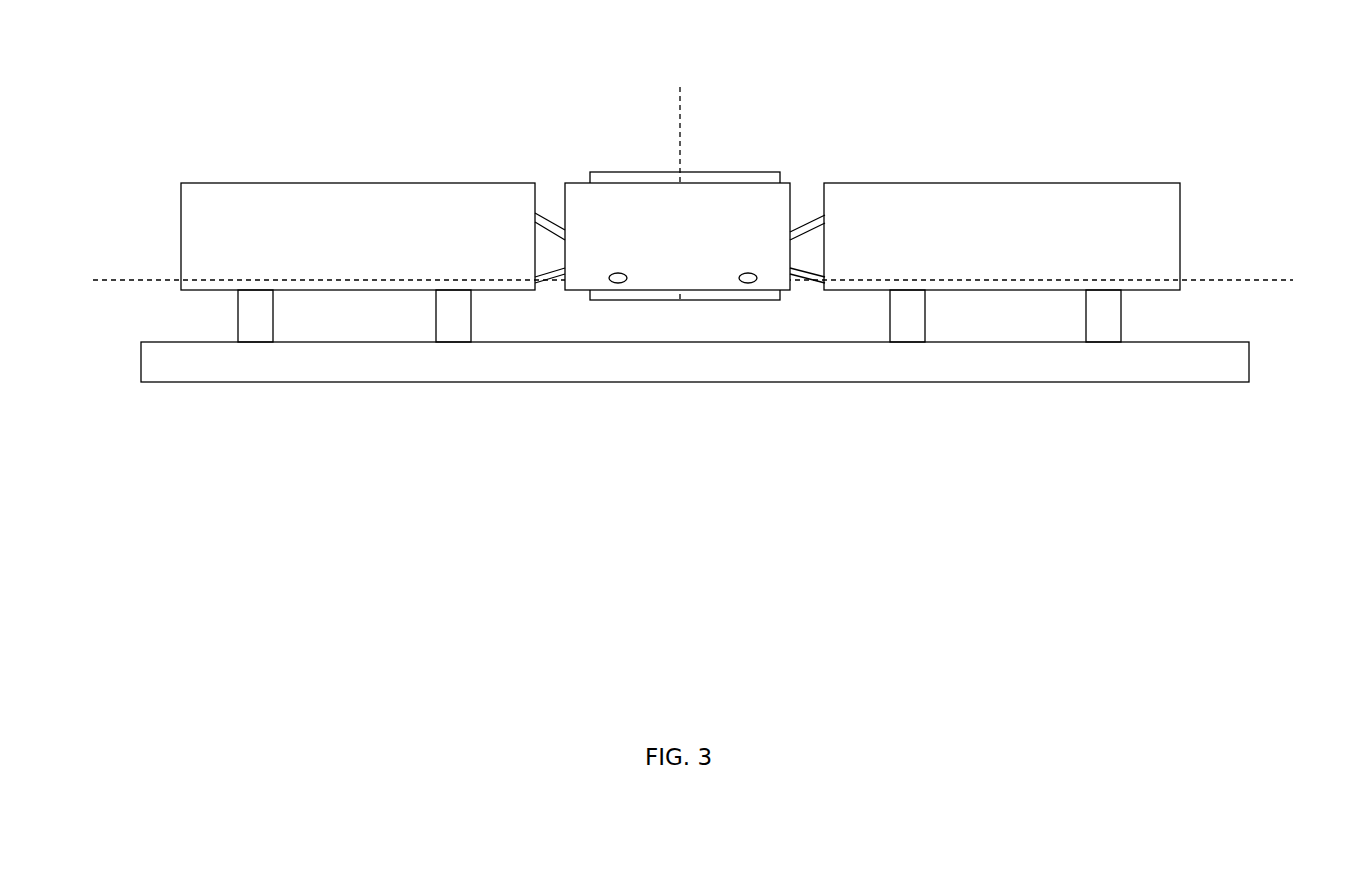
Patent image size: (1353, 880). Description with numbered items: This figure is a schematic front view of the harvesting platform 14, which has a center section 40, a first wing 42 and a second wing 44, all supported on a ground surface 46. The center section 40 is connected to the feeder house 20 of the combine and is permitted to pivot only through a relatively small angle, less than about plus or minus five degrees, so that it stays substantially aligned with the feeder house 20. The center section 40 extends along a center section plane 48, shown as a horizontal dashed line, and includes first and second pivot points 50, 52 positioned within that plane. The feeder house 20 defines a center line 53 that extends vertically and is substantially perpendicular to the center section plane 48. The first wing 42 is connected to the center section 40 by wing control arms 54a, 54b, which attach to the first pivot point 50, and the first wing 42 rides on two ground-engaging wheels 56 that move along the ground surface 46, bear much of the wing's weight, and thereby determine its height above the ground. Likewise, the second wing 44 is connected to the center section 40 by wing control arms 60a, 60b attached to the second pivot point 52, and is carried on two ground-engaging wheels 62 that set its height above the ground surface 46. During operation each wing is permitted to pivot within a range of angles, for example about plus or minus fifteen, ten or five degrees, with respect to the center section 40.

The harvesting platform 14 is at (913, 78).
The feeder house 20 is at (725, 172).
The center section 40 is at (650, 200).
The first wing 42 is at (360, 205).
The second wing 44 is at (1002, 205).
The ground surface 46 is at (1012, 342).
The center section plane 48 is at (1243, 278).
The first pivot point 50 is at (614, 285).
The second pivot point 52 is at (750, 285).
The center line 53 is at (685, 113).
The wing control arm 54a is at (541, 286).
The wing control arm 54b is at (555, 220).
The ground-engaging wheels 56 is at (240, 313).
The wing control arm 60a is at (818, 286).
The wing control arm 60b is at (805, 225).
The ground-engaging wheels 62 is at (925, 313).